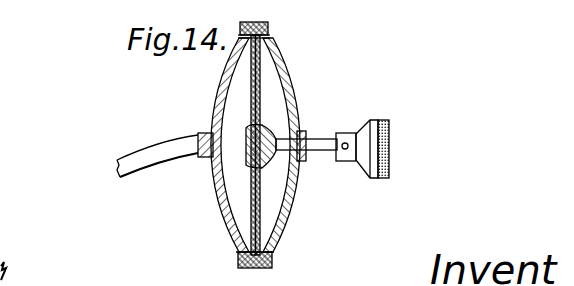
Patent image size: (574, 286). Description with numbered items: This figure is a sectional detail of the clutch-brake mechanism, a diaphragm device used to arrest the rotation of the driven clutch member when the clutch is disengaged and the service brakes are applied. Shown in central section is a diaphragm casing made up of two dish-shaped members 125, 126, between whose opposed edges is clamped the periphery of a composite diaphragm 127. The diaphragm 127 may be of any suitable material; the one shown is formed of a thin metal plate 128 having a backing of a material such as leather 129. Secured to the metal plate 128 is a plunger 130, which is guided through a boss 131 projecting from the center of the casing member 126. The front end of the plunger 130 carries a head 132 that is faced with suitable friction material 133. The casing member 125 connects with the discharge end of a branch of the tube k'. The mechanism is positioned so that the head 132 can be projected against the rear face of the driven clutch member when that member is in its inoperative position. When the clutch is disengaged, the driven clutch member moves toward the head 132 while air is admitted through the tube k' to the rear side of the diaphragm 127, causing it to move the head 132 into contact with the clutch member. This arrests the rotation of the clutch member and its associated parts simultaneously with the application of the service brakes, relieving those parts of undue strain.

The dish-shaped casing member 125 is at (219, 97).
The dish-shaped casing member 126 is at (294, 94).
The composite diaphragm 127 is at (248, 145).
The metal plate 128 is at (258, 204).
The leather backing 129 is at (252, 200).
The plunger 130 is at (315, 142).
The boss 131 is at (303, 161).
The head 132 is at (371, 165).
The friction material 133 is at (390, 165).
The tube k' is at (165, 156).